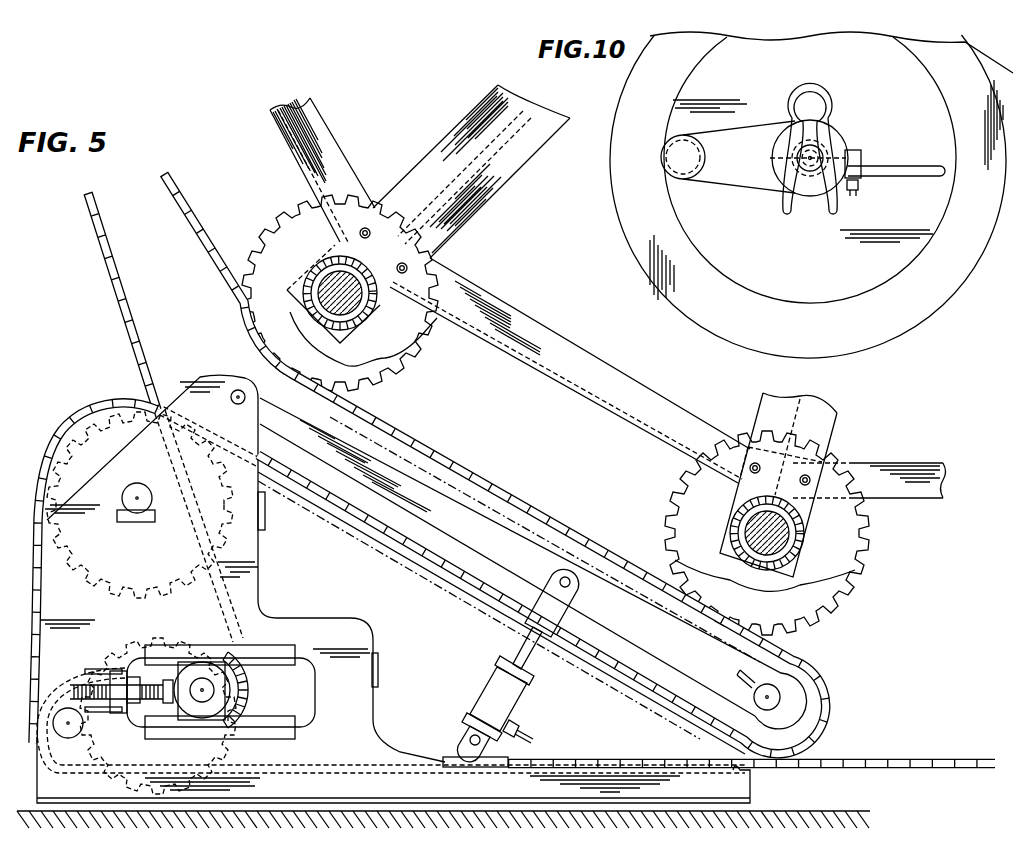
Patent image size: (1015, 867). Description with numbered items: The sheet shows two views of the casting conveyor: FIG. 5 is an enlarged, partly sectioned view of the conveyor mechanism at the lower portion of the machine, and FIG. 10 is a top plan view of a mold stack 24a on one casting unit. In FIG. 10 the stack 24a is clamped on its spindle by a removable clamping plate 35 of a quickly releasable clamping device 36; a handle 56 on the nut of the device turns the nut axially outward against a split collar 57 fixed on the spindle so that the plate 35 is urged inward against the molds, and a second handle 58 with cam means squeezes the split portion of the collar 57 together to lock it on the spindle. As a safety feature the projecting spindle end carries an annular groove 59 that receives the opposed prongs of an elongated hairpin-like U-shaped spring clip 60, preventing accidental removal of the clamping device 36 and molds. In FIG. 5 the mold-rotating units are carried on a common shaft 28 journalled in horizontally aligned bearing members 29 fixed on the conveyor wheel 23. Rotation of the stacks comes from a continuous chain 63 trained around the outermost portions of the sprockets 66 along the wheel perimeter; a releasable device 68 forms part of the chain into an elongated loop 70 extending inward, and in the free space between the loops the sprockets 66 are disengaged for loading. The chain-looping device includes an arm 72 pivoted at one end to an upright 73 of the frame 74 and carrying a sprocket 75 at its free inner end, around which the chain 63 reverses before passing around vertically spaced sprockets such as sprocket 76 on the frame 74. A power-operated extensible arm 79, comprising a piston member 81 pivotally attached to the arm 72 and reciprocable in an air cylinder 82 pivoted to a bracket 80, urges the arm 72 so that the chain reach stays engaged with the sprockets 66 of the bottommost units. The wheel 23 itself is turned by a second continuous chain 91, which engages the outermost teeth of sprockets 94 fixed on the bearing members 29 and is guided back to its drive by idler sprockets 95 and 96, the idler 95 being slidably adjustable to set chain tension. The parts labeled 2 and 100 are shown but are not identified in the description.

In FIG. 10, the machine frame / housing wall 2 is at (982, 73).
In FIG. 5, the conveyor wheel 23 is at (522, 168).
In FIG. 10, the stack of molds 24a is at (610, 195).
In FIG. 5, the common shaft 28 is at (338, 292).
In FIG. 5, the bearing member 29 is at (327, 273).
In FIG. 10, the removable clamping plate 35 is at (937, 205).
In FIG. 10, the quickly releasable clamping device 36 is at (852, 138).
In FIG. 10, the handle 56 is at (743, 118).
In FIG. 10, the split collar 57 is at (862, 148).
In FIG. 10, the handle 58 is at (910, 167).
In FIG. 10, the annular groove 59 is at (787, 165).
In FIG. 10, the U-shaped spring clip 60 is at (818, 83).
In FIG. 5, the continuous chain 63 is at (433, 453).
In FIG. 5, the sprocket 66 is at (387, 357).
In FIG. 5, the releasable chain-looping device 68 is at (393, 432).
In FIG. 5, the chain loop 70 is at (542, 507).
In FIG. 5, the arm 72 is at (393, 500).
In FIG. 5, the upright 73 is at (236, 389).
In FIG. 5, the frame 74 is at (283, 620).
In FIG. 5, the sprocket 75 is at (783, 658).
In FIG. 5, the sprocket 76 is at (107, 408).
In FIG. 5, the power-operated extensible arm 79 is at (530, 653).
In FIG. 5, the bracket 80 is at (463, 743).
In FIG. 5, the piston member 81 is at (530, 640).
In FIG. 5, the air cylinder 82 is at (490, 683).
In FIG. 5, the continuous chain 91 is at (123, 293).
In FIG. 5, the sprocket 94 is at (277, 228).
In FIG. 5, the idler sprocket 95 is at (237, 692).
In FIG. 5, the idler sprocket 96 is at (27, 745).
In FIG. 5, the support arm 100 is at (440, 147).